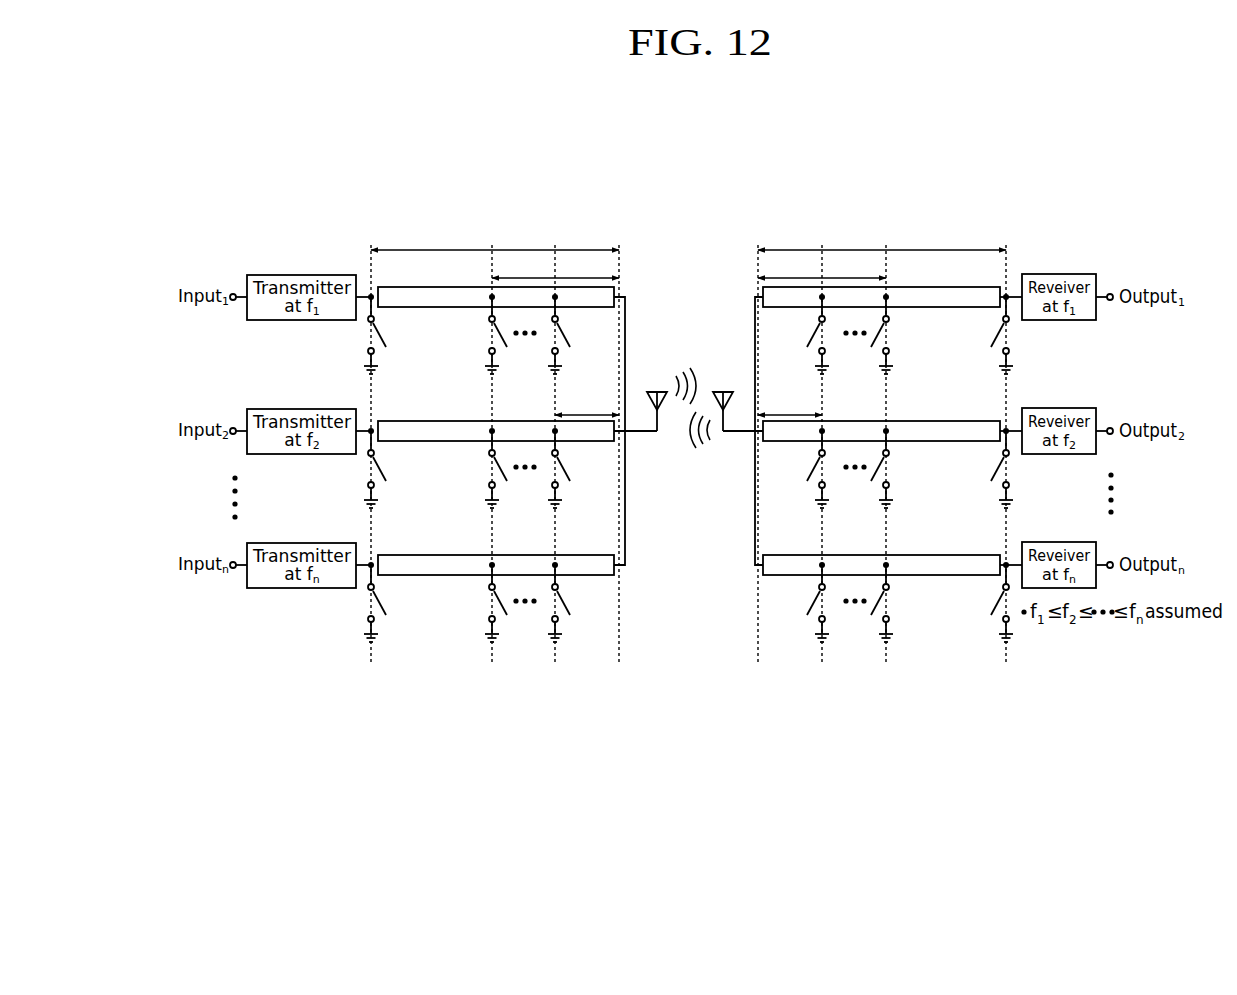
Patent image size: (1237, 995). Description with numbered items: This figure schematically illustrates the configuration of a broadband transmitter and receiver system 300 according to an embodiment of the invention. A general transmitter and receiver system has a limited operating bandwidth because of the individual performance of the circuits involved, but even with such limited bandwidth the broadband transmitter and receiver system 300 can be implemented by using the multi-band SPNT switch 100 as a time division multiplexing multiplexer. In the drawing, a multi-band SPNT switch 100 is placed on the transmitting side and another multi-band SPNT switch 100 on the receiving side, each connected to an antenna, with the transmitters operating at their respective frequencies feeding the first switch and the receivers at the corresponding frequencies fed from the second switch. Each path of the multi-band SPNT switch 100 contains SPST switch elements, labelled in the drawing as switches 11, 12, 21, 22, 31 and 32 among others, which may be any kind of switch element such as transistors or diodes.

The broadband transmitter and receiver system 300 is at (908, 189).
The multi-band SPNT switch 100 is at (510, 209).
The switch S' 11 is at (688, 334).
The switch S' 12 is at (691, 334).
The switch S' 21 is at (688, 468).
The switch S' 22 is at (691, 468).
The switch S' 31 is at (688, 602).
The switch S' 32 is at (691, 602).